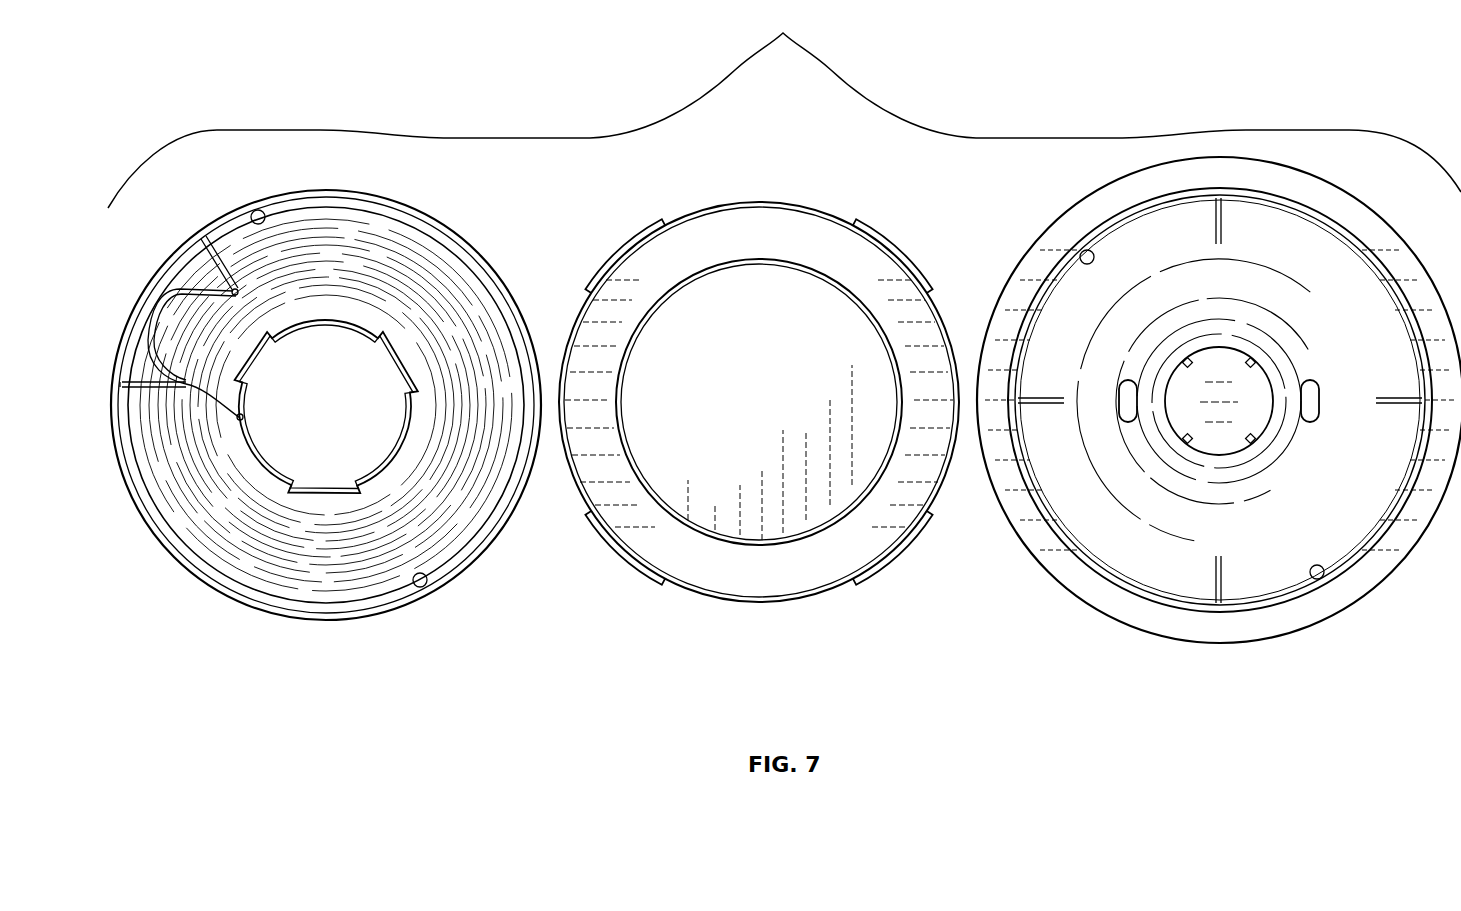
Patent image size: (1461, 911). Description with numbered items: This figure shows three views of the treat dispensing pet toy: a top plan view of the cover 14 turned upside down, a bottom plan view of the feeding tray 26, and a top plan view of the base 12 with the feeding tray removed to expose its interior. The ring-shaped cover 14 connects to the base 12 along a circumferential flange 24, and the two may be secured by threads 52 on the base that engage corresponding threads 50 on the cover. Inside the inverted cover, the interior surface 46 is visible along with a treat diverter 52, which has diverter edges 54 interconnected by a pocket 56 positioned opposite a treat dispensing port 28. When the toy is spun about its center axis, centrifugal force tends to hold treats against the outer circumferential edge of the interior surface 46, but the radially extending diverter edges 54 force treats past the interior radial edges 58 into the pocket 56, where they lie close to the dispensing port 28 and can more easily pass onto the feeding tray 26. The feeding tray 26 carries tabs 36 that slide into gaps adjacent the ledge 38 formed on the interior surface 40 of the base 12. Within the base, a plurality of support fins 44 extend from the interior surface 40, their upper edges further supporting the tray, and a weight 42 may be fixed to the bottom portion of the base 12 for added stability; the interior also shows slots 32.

The base 12 is at (1219, 439).
The cover 14 is at (324, 419).
The circumferential flange 24 is at (1383, 249).
The feeding tray 26 is at (768, 302).
The treat dispensing port 28 is at (250, 356).
The slots 32 is at (1124, 406).
The tabs 36 is at (634, 243).
The ledge 38 is at (1086, 250).
The interior surface 40 is at (1312, 504).
The weight 42 is at (1192, 388).
The support fins 44 is at (1222, 226).
The interior surface 46 is at (366, 222).
The threads 50 is at (256, 210).
The treat diverter 52 is at (160, 392).
The diverter edges 54 is at (212, 250).
The pocket 56 is at (168, 288).
The interior radial edges 58 is at (240, 296).